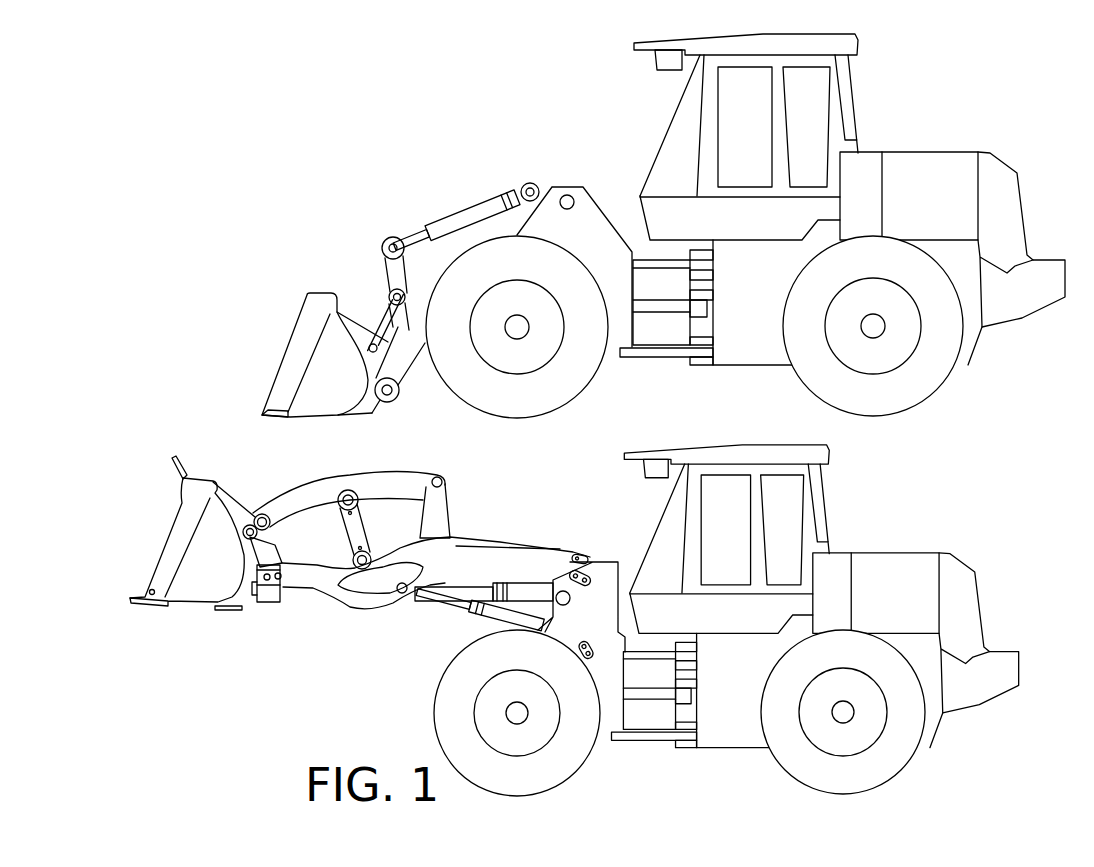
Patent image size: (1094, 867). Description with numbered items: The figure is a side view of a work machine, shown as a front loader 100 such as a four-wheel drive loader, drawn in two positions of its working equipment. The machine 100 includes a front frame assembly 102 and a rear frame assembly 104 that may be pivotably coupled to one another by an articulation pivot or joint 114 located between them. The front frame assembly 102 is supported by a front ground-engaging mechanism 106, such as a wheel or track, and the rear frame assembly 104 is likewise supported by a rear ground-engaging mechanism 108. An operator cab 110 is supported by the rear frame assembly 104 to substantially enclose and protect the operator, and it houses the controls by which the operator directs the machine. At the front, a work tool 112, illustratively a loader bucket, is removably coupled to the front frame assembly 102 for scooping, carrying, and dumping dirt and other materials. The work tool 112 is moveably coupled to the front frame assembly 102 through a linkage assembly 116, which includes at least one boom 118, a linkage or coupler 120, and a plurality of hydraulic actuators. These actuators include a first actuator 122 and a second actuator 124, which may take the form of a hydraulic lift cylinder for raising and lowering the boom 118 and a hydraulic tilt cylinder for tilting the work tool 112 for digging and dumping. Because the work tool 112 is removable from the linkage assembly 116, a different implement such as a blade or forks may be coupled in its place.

The front loader 100 is at (170, 138).
The front frame assembly 102 is at (598, 218).
The rear frame assembly 104 is at (948, 163).
The front ground-engaging mechanism 106 is at (583, 373).
The rear ground-engaging mechanism 108 is at (943, 372).
The operator cab 110 is at (872, 77).
The work tool 112 is at (292, 370).
The articulation joint 114 is at (678, 377).
The linkage assembly 116 is at (370, 262).
The boom 118 is at (475, 562).
The linkage or coupler 120 is at (300, 505).
The first actuator 122 is at (540, 587).
The second actuator 124 is at (472, 617).